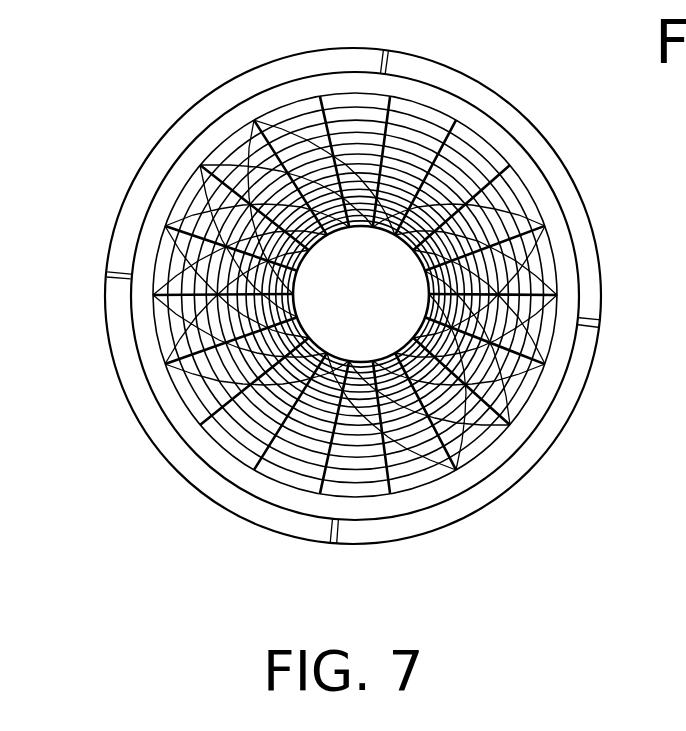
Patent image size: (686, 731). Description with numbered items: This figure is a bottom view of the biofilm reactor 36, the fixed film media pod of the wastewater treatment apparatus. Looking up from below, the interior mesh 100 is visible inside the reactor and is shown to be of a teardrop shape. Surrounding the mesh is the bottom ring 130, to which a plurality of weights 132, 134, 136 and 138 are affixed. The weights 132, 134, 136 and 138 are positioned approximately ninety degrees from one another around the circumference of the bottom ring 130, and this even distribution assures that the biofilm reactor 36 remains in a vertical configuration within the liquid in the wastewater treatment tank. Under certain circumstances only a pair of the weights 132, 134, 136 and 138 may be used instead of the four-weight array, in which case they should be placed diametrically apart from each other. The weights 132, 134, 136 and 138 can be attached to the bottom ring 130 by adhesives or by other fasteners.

The biofilm reactor 36 is at (473, 77).
The bottom ring 130 is at (575, 208).
The weight 132 is at (122, 323).
The weight 134 is at (353, 80).
The weight 136 is at (560, 292).
The weight 138 is at (367, 483).
The interior mesh 100 is at (540, 418).